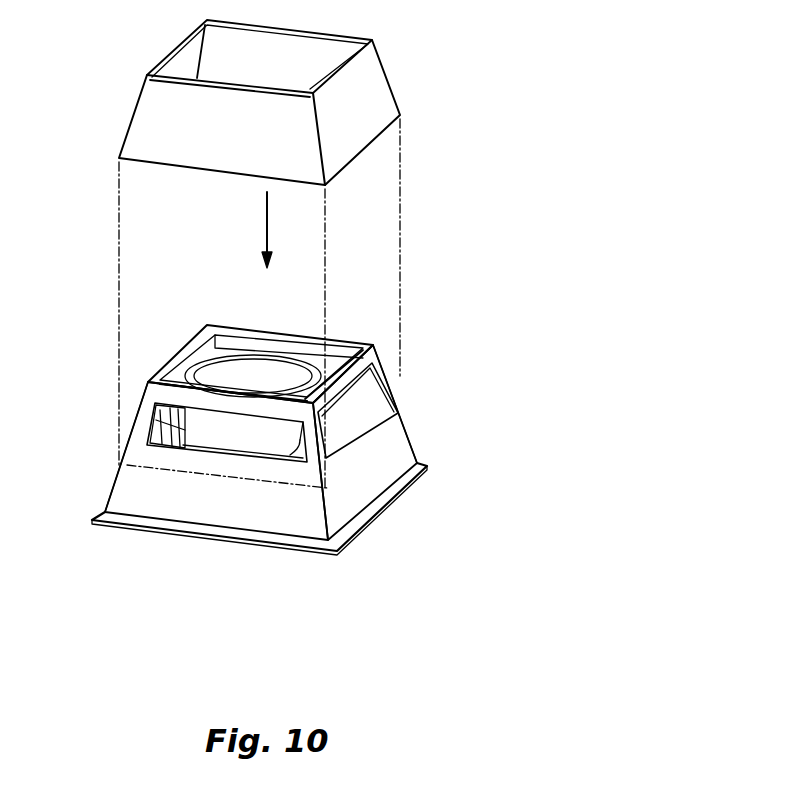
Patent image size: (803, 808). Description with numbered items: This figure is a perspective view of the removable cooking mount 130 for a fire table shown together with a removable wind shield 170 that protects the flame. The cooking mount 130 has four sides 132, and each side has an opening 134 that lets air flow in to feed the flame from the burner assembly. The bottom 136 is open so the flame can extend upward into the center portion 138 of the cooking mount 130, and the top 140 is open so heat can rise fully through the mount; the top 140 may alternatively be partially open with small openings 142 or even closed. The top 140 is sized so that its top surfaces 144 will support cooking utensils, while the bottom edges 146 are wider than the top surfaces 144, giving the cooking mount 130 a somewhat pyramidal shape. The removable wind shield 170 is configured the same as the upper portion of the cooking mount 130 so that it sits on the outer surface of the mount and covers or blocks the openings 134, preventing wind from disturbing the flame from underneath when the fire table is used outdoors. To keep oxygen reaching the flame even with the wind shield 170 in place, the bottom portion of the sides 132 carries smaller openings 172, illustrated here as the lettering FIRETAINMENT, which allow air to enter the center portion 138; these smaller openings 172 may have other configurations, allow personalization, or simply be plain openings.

The removable cooking mount 130 is at (383, 372).
The sides 132 is at (162, 508).
The opening 134 is at (150, 442).
The bottom 136 is at (397, 420).
The center portion 138 is at (155, 422).
The top 140 is at (305, 337).
The small openings 142 is at (328, 362).
The top surfaces 144 is at (233, 327).
The bottom edges 146 is at (415, 478).
The removable wind shield 170 is at (385, 67).
The smaller openings 172 is at (225, 502).